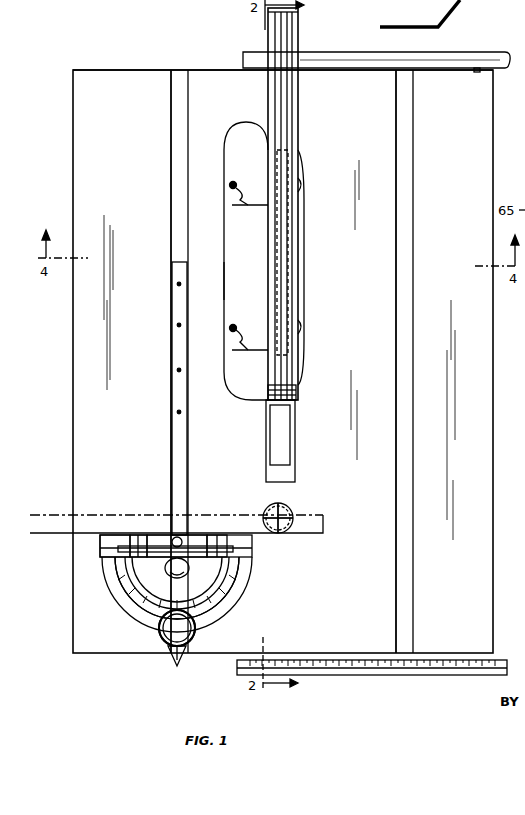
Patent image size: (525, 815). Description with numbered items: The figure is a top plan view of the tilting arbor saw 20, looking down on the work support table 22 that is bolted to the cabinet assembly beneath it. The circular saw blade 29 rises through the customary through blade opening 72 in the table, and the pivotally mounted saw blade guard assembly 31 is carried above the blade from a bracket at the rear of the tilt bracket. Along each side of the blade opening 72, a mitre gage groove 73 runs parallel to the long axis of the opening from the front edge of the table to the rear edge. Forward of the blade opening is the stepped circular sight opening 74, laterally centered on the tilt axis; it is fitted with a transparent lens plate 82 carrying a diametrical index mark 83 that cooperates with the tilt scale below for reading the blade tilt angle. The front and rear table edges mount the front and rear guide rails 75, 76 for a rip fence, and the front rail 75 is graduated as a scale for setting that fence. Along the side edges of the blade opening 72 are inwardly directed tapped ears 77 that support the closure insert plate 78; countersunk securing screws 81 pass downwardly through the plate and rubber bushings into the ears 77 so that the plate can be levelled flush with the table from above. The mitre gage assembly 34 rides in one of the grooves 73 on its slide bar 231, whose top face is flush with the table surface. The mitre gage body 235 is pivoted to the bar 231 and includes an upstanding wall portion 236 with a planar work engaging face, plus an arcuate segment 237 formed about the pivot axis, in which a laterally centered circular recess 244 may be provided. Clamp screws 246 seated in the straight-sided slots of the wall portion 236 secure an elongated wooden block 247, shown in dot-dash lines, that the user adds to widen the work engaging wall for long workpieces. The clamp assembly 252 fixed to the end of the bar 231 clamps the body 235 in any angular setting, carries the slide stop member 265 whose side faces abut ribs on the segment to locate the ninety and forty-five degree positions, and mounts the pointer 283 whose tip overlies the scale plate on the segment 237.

The tilting arbor saw 20 is at (172, 68).
The work support table 22 is at (488, 106).
The circular saw blade 29 is at (284, 296).
The saw blade guard assembly 31 is at (295, 400).
The mitre gage assembly 34 is at (258, 576).
The blade opening 72 is at (226, 265).
The mitre gage groove 73 is at (172, 98).
The sight opening 74 is at (266, 502).
The front guide rail 75 is at (437, 676).
The rear guide rail 76 is at (455, 52).
The tapped ears 77 is at (250, 272).
The blade opening closure insert plate 78 is at (252, 124).
The securing screws 81 is at (233, 184).
The transparent lens plate 82 is at (290, 509).
The index mark 83 is at (270, 517).
The slide bar 231 is at (172, 312).
The mitre gage body 235 is at (238, 580).
The upstanding wall portion 236 is at (110, 535).
The arcuate segment 237 is at (130, 535).
The circular recess 244 is at (168, 574).
The clamp screws 246 is at (128, 549).
The wooden block 247 is at (325, 520).
The clamp assembly 252 is at (200, 633).
The slide stop member 265 is at (170, 670).
The pointer 283 is at (160, 620).